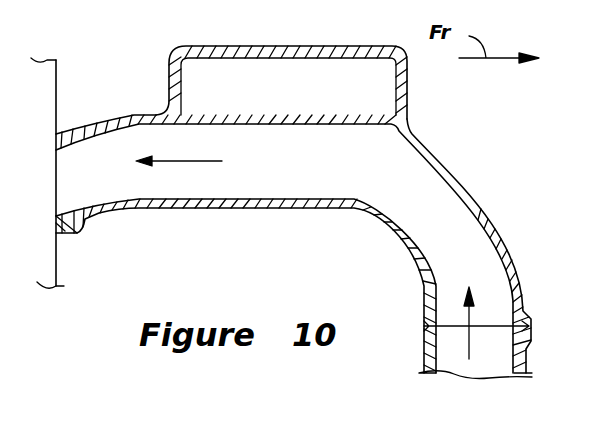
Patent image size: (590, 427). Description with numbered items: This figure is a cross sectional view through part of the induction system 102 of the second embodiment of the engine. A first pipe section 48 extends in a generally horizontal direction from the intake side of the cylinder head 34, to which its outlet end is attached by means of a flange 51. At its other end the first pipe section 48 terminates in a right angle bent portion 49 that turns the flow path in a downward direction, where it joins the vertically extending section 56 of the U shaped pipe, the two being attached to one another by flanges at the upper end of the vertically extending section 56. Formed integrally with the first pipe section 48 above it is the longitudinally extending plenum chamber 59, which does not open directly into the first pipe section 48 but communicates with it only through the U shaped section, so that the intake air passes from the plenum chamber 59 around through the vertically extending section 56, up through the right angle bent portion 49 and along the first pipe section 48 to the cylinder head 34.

The cylinder head 34 is at (48, 90).
The plenum chamber 59 is at (290, 45).
The first pipe section 48 is at (503, 217).
The right angle bent portion 49 is at (412, 250).
The flange 51 is at (75, 232).
The vertically extending section 56 is at (427, 355).
The induction system 102 is at (452, 123).